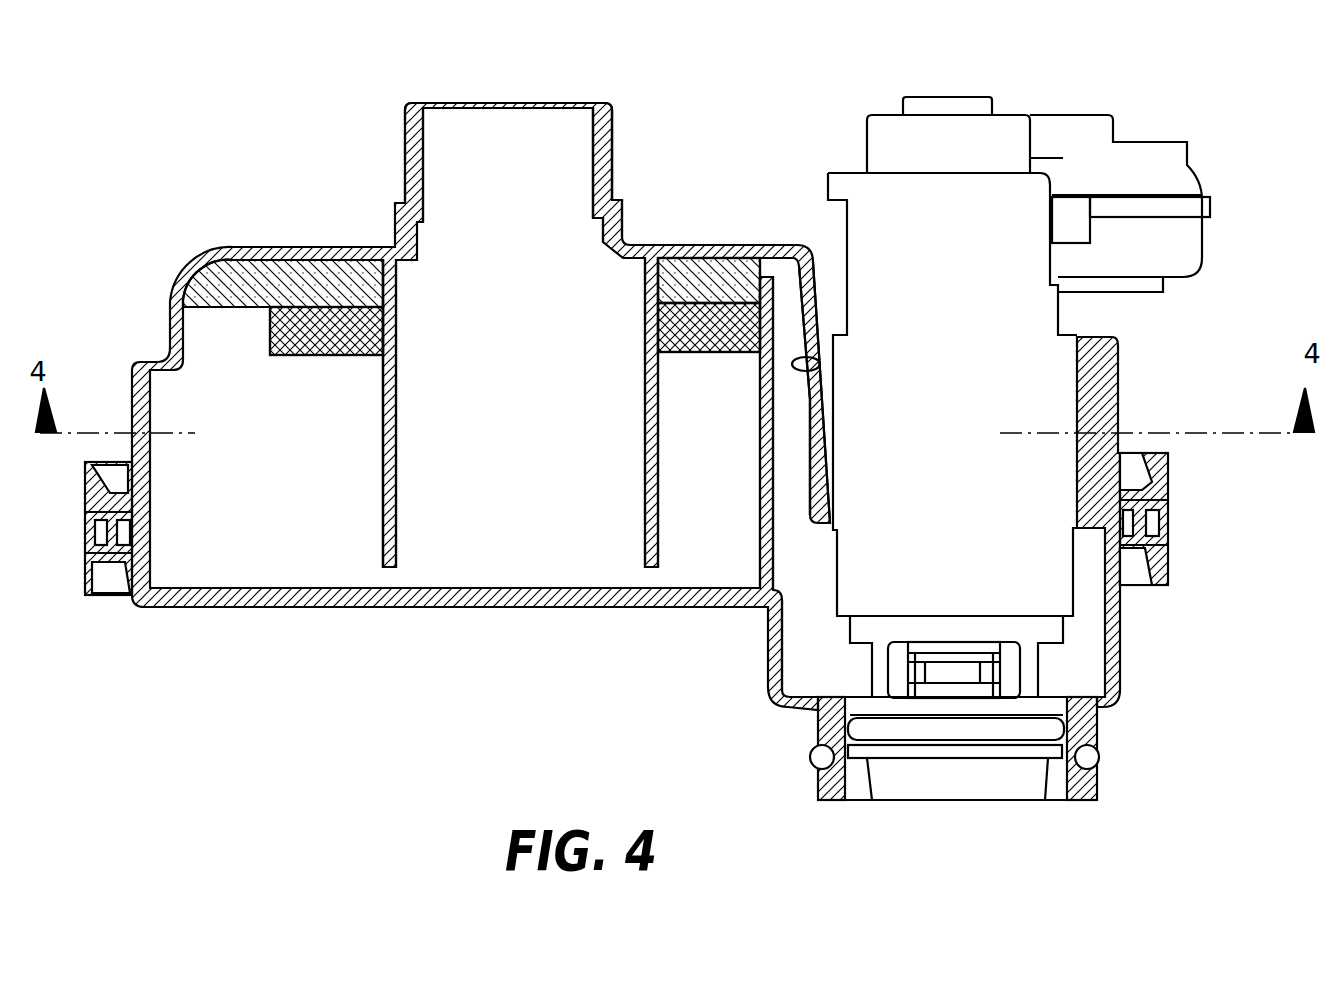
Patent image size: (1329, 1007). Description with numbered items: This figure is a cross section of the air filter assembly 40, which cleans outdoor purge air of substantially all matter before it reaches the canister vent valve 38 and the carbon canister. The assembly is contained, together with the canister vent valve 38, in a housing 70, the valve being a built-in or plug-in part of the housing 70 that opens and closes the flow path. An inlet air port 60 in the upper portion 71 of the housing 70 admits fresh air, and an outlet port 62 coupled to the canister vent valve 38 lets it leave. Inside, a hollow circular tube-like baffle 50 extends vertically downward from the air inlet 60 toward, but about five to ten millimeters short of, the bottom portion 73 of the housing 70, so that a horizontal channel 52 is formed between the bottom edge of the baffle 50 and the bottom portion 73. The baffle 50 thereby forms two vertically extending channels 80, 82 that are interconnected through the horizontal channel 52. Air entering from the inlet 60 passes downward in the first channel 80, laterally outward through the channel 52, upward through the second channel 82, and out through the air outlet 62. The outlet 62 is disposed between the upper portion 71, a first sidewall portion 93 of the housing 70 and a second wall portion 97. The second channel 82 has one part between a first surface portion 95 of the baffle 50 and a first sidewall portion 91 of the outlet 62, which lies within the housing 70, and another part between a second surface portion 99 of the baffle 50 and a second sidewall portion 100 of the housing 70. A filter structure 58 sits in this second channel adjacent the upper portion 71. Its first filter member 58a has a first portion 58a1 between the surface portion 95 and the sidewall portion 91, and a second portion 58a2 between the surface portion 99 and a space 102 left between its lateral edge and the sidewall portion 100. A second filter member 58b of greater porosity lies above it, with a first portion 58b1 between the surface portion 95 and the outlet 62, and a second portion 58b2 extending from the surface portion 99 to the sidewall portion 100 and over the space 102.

The canister vent valve 38 is at (1038, 317).
The air filter assembly 40 is at (618, 205).
The baffle 50 is at (400, 405).
The horizontal channel 52 is at (404, 578).
The filter structure 58 is at (411, 310).
The first filter member 58a is at (288, 325).
The first portion of first filter member 58a1 is at (700, 352).
The second portion of first filter member 58a2 is at (348, 356).
The second filter member 58b is at (248, 275).
The first portion of second filter member 58b1 is at (718, 272).
The second portion of second filter member 58b2 is at (370, 285).
The inlet air port 60 is at (490, 130).
The outlet port 62 is at (795, 532).
The housing 70 is at (333, 240).
The upper portion of housing 71 is at (677, 244).
The bottom portion of housing 73 is at (430, 608).
The first vertically extending channel 80 is at (505, 403).
The second vertically extending channel 82 is at (240, 563).
The first sidewall portion of outlet 91 is at (760, 455).
The first sidewall portion of housing 93 is at (825, 418).
The first surface portion of baffle 95 is at (645, 447).
The second wall portion 97 is at (812, 362).
The second surface portion of baffle 99 is at (383, 490).
The second sidewall portion of housing 100 is at (152, 482).
The space 102 is at (221, 343).